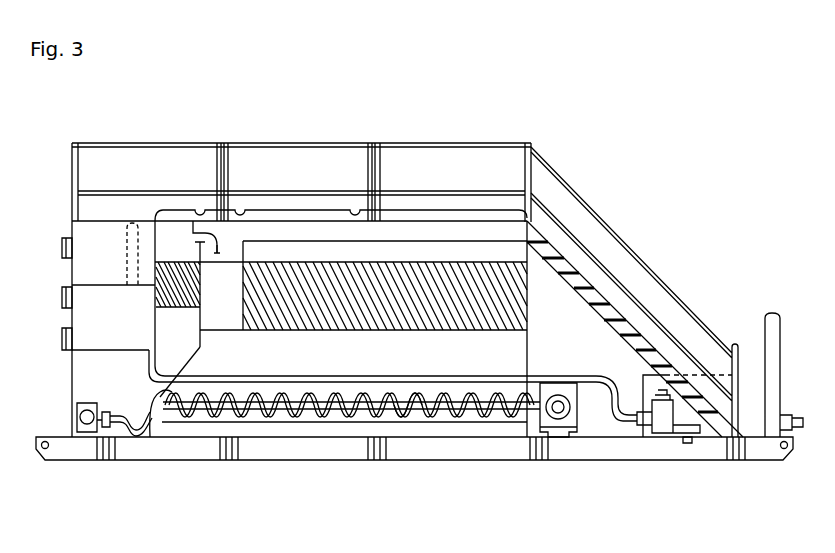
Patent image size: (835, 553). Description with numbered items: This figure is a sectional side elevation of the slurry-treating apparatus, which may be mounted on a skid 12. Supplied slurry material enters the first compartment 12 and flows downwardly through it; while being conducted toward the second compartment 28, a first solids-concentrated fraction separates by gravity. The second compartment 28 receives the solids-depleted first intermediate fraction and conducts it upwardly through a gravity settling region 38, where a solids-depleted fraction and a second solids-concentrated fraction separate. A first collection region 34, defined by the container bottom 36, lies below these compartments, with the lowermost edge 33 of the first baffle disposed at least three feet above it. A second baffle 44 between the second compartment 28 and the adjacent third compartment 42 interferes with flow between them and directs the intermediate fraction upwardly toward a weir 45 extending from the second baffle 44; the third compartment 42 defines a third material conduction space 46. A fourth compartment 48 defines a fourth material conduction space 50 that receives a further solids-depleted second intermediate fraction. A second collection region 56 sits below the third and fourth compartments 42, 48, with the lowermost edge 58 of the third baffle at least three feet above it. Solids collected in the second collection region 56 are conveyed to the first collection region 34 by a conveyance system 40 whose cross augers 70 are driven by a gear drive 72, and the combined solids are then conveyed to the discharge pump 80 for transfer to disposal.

The first compartment 12 is at (350, 466).
The second compartment 28 is at (177, 213).
The lowermost edge of the first baffle 33 is at (149, 356).
The first collection region 34 is at (150, 438).
The container bottom 36 is at (147, 437).
The gravity settling region 38 is at (180, 263).
The conveyance system 40 is at (447, 430).
The third compartment 42 is at (207, 237).
The second baffle 44 is at (200, 316).
The weir 45 is at (220, 250).
The third material conduction space 46 is at (232, 307).
The fourth compartment 48 is at (355, 205).
The fourth material conduction space 50 is at (397, 353).
The second collection region 56 is at (404, 393).
The lowermost edge of the third baffle 58 is at (247, 358).
The cross augers 70 is at (323, 418).
The gear drive 72 is at (556, 432).
The discharge pump 80 is at (84, 432).